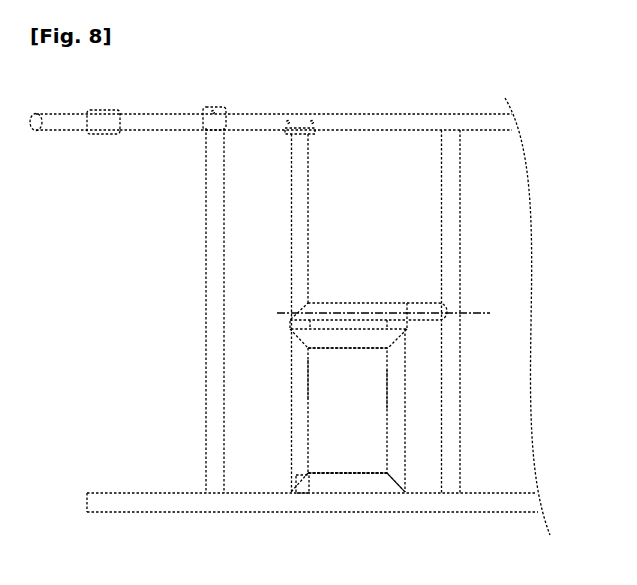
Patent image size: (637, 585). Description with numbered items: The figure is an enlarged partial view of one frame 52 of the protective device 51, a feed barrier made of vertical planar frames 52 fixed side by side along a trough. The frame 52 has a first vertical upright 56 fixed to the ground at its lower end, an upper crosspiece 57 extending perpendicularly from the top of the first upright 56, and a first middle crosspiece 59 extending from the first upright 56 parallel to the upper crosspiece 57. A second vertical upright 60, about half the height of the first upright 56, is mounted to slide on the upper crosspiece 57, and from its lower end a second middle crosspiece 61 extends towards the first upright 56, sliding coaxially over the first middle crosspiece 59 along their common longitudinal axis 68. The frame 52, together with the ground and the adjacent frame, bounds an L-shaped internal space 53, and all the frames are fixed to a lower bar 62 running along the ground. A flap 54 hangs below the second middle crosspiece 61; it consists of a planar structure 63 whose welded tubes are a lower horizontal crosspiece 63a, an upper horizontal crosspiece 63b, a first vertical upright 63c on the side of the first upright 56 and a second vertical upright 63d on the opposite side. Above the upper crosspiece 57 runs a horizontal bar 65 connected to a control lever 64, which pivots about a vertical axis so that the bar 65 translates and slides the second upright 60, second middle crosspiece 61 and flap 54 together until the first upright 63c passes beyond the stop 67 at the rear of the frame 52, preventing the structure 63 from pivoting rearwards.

The protective device 51 is at (548, 152).
The vertical planar frame 52 is at (258, 135).
The L-shaped internal space 53 is at (240, 328).
The flap 54 is at (373, 485).
The first vertical upright 56 is at (213, 272).
The upper crosspiece 57 is at (387, 114).
The first middle crosspiece 59 is at (420, 318).
The second vertical upright 60 is at (297, 258).
The second middle crosspiece 61 is at (323, 303).
The lower bar 62 is at (95, 494).
The planar structure 63 is at (148, 345).
The lower horizontal crosspiece 63a is at (352, 475).
The upper horizontal crosspiece 63b is at (347, 343).
The first vertical upright 63c is at (297, 376).
The second vertical upright 63d is at (395, 389).
The control lever 64 is at (82, 113).
The horizontal bar 65 is at (148, 118).
The stop 67 is at (295, 475).
The longitudinal axis 68 is at (463, 312).